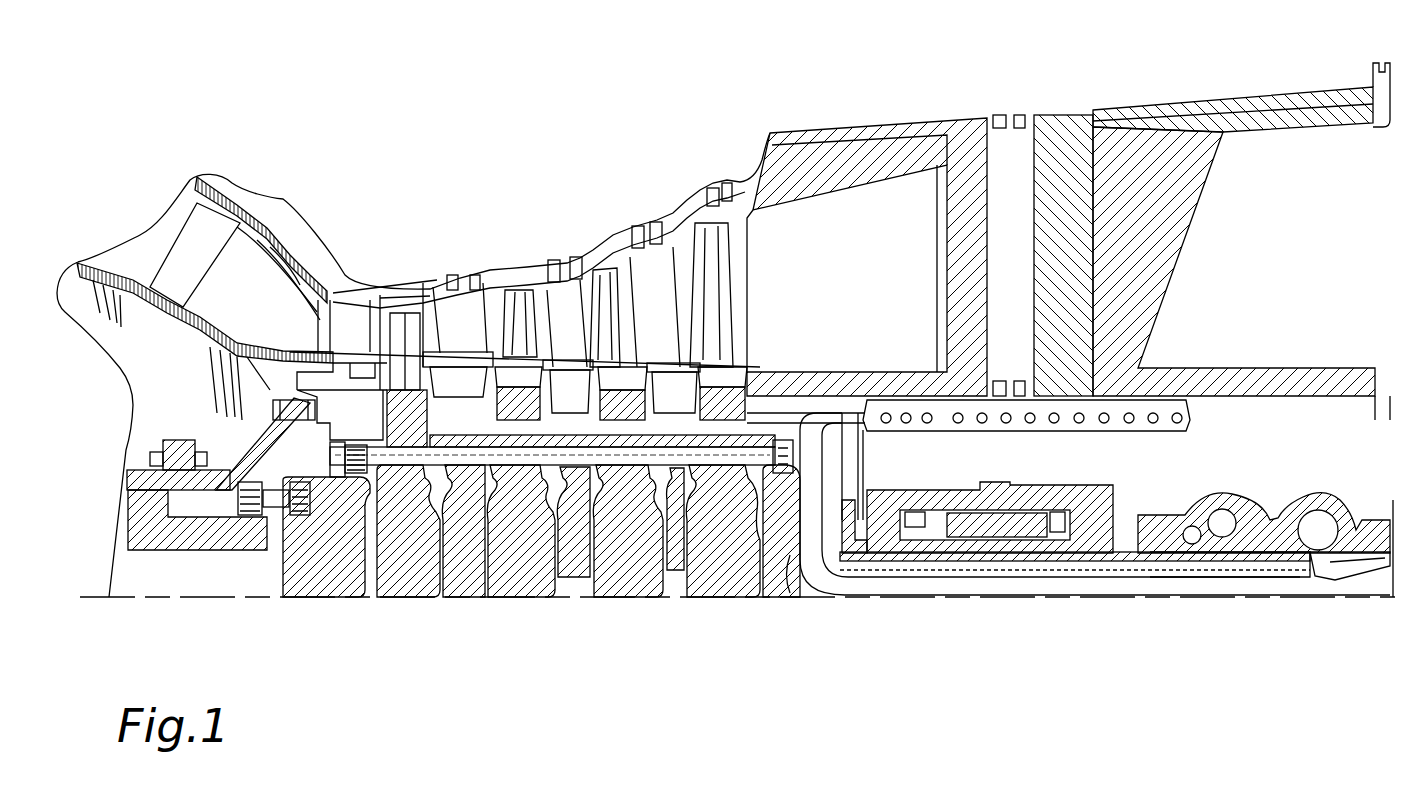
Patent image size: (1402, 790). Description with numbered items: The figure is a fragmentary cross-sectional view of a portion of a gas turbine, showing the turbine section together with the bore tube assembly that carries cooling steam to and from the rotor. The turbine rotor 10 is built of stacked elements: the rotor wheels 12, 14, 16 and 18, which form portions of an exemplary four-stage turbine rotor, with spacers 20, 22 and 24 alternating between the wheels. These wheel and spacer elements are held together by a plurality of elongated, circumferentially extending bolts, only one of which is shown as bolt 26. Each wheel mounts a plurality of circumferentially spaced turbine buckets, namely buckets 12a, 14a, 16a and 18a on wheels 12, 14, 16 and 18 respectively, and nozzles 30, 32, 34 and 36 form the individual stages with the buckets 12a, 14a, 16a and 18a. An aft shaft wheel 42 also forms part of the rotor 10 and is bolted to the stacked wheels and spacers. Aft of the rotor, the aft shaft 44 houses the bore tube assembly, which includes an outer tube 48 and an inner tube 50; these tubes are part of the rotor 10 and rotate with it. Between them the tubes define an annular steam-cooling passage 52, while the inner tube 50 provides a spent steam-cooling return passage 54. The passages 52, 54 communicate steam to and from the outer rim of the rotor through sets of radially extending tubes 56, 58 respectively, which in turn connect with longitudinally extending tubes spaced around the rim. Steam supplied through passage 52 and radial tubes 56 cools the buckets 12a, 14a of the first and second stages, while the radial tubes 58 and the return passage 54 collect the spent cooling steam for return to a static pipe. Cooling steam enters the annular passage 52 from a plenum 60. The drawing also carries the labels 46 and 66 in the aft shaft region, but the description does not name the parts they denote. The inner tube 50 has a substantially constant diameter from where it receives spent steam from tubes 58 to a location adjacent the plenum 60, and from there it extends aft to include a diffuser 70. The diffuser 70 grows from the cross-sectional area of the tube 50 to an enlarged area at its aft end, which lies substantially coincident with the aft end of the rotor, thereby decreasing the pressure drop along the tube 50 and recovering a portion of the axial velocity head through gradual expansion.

The turbine rotor 10 is at (657, 660).
The rotor wheel 12 is at (423, 598).
The turbine bucket 12a is at (404, 325).
The rotor wheel 14 is at (532, 592).
The turbine bucket 14a is at (517, 293).
The rotor wheel 16 is at (630, 587).
The turbine bucket 16a is at (598, 262).
The rotor wheel 18 is at (712, 587).
The turbine bucket 18a is at (727, 275).
The spacer 20 is at (467, 585).
The spacer 22 is at (577, 579).
The spacer 24 is at (673, 572).
The bolt 26 is at (377, 443).
The nozzle 30 is at (370, 343).
The nozzle 32 is at (475, 332).
The nozzle 34 is at (583, 280).
The nozzle 36 is at (650, 258).
The aft shaft wheel 42 is at (790, 582).
The aft shaft 44 is at (1003, 563).
The bearing housing 46 is at (1035, 492).
The outer tube 48 is at (1067, 565).
The inner tube 50 is at (1103, 578).
The annular steam-cooling passage 52 is at (1237, 568).
The spent steam-cooling return passage 54 is at (893, 592).
The radially extending tube 56 is at (858, 455).
The radially extending tube 58 is at (817, 500).
The plenum 60 is at (1320, 528).
The seal assembly 66 is at (1266, 478).
The diffuser 70 is at (1347, 569).